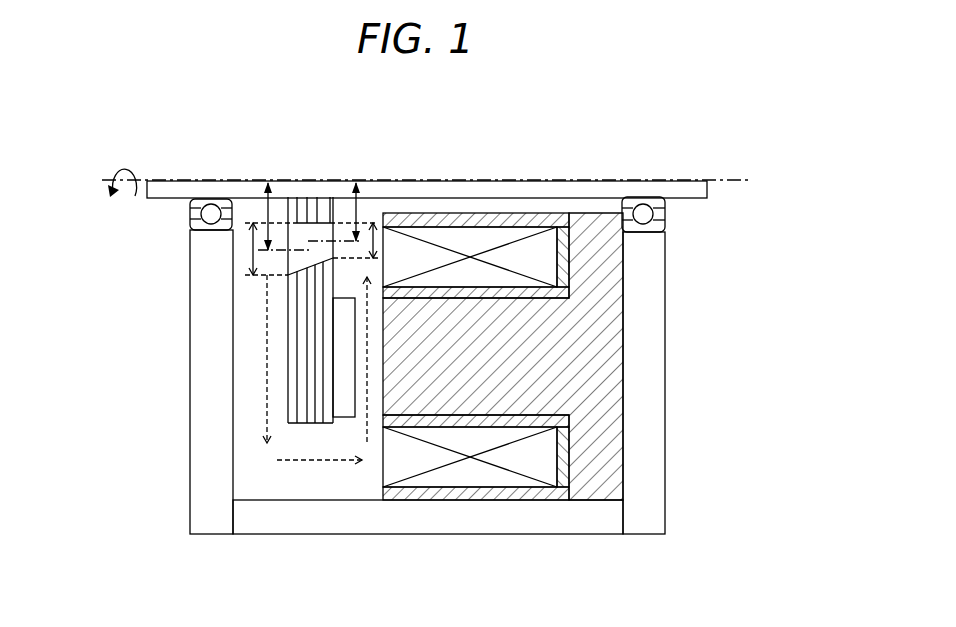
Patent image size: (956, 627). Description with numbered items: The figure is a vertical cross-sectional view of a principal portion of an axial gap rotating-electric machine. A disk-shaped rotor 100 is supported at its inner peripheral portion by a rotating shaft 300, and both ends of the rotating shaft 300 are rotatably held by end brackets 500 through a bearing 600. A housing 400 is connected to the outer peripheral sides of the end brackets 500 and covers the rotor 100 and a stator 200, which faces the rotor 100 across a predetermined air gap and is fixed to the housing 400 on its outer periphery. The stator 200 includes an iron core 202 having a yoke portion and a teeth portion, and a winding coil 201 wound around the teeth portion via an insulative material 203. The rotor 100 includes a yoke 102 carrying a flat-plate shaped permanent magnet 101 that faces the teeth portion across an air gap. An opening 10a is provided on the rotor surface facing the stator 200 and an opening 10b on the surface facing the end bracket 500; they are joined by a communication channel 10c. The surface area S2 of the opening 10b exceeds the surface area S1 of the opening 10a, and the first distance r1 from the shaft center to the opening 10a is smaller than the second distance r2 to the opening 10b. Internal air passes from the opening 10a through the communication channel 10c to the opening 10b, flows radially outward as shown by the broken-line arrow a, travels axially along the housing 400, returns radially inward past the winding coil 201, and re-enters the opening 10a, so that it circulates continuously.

The opening 10a is at (333, 233).
The opening 10b is at (290, 237).
The communication channel 10c is at (297, 257).
The rotor 100 is at (268, 350).
The permanent magnet 101 is at (345, 417).
The yoke 102 is at (307, 332).
The stator 200 is at (572, 405).
The winding coil 201 is at (543, 268).
The iron core 202 is at (607, 392).
The insulative material 203 is at (553, 295).
The rotating shaft 300 is at (573, 187).
The housing 400 is at (582, 534).
The end bracket 500 is at (190, 462).
The bearing 600 is at (190, 223).
The surface area of opening 10a S1 is at (378, 238).
The surface area of opening 10b S2 is at (253, 247).
The first distance r1 is at (357, 183).
The second distance r2 is at (268, 183).
The broken-line arrow a is at (267, 397).